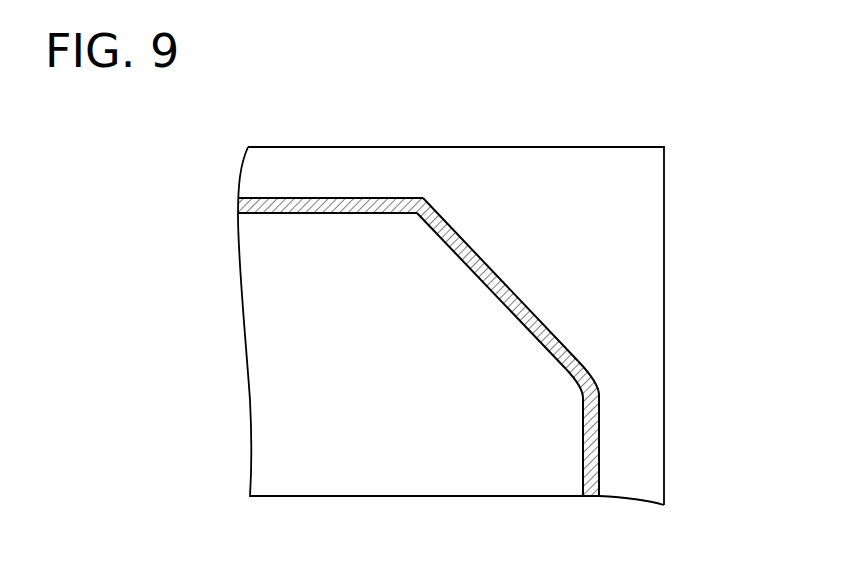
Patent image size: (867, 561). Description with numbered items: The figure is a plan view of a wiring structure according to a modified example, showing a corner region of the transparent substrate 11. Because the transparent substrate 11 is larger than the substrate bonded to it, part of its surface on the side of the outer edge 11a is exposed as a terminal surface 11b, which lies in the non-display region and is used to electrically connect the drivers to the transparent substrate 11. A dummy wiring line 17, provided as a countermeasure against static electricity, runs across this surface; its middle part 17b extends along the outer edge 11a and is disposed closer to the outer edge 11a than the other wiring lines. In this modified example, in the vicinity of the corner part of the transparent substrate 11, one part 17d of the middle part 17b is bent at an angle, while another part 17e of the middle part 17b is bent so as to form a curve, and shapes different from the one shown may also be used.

The transparent substrate 11 is at (451, 289).
The outer edge 11a is at (562, 147).
The terminal surface 11b is at (303, 365).
The dummy wiring line 17 is at (459, 288).
The middle part 17b is at (332, 198).
The part bent at an angle 17d is at (428, 198).
The part bent to form a curve 17e is at (599, 390).